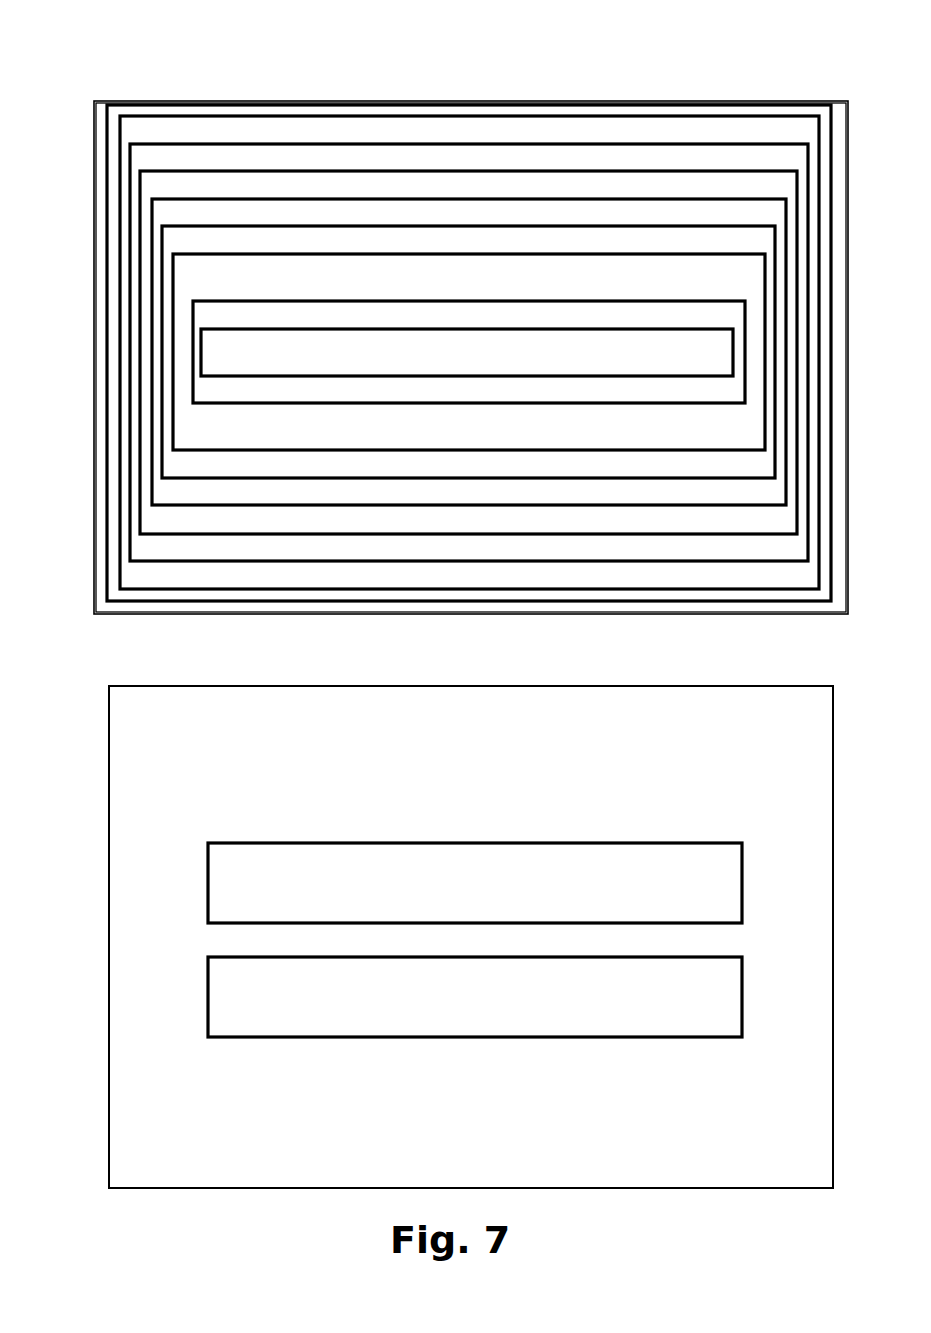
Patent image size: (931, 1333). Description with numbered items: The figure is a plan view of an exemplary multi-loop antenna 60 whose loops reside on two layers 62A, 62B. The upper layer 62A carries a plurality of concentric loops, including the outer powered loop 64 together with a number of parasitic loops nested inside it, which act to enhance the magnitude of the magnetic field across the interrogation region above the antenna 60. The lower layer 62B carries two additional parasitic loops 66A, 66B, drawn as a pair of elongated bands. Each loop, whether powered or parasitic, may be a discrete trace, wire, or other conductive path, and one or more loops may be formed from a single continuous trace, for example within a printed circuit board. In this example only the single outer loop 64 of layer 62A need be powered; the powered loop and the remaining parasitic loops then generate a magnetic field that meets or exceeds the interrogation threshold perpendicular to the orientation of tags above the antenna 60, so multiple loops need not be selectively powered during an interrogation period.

The multi-loop antenna 60 is at (630, 62).
The layer 62A is at (94, 313).
The layer 62B is at (109, 926).
The powered loop 64 is at (712, 100).
The parasitic loop 66A is at (437, 841).
The parasitic loop 66B is at (443, 1039).